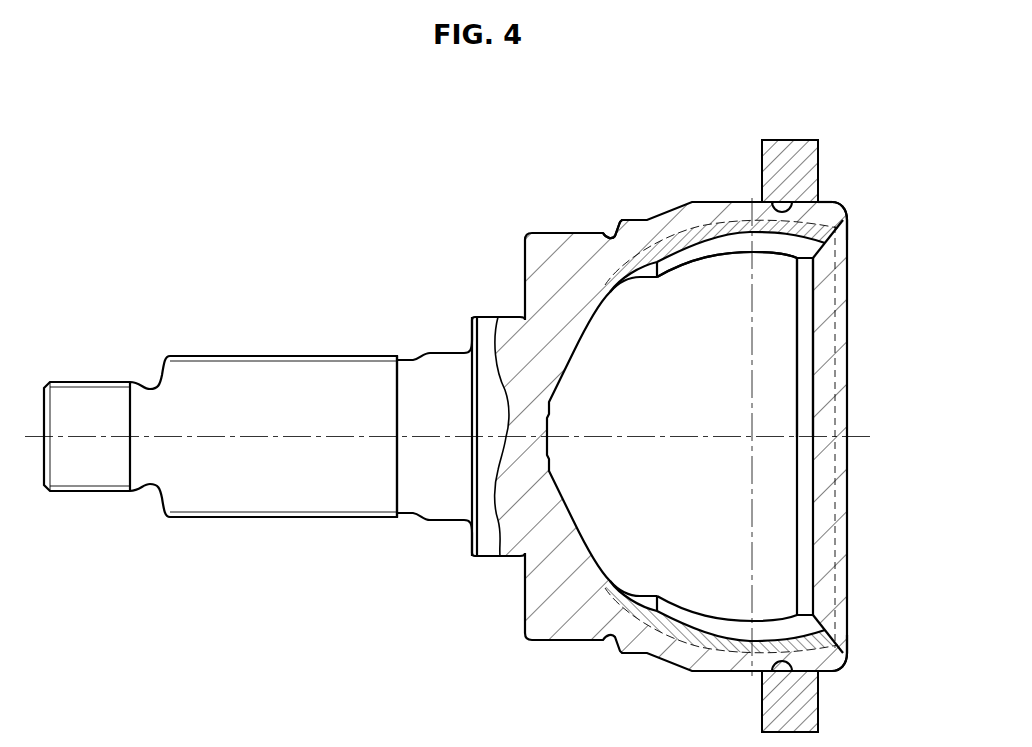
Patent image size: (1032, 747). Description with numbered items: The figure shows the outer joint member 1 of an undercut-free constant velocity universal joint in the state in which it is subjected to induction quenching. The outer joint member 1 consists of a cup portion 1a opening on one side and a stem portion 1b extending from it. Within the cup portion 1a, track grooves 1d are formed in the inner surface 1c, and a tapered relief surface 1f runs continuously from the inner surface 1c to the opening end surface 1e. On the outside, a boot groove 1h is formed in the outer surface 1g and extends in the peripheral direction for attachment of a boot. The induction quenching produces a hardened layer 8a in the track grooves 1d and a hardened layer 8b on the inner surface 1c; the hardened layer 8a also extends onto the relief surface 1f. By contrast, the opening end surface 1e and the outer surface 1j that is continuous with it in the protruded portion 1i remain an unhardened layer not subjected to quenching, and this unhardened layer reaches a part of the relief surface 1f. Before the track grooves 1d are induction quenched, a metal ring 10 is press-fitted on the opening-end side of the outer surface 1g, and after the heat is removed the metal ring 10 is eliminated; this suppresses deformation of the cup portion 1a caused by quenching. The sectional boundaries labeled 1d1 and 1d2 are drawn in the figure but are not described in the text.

The outer joint member 1 is at (553, 231).
The cup portion 1a is at (629, 217).
The stem portion 1b is at (285, 354).
The inner surface 1c is at (731, 256).
The track groove 1d is at (800, 267).
The inner mouth wall portion 1d1 is at (690, 238).
The outer mouth wall portion 1d2 is at (815, 212).
The opening end surface 1e is at (849, 221).
The tapered relief surface 1f is at (824, 247).
The outer surface 1g is at (815, 202).
The boot groove 1h is at (782, 200).
The protruded portion 1i is at (830, 641).
The outer surface 1j is at (844, 668).
The hardened layer 8a is at (730, 232).
The hardened layer 8b is at (720, 648).
The metal ring 10 is at (788, 150).